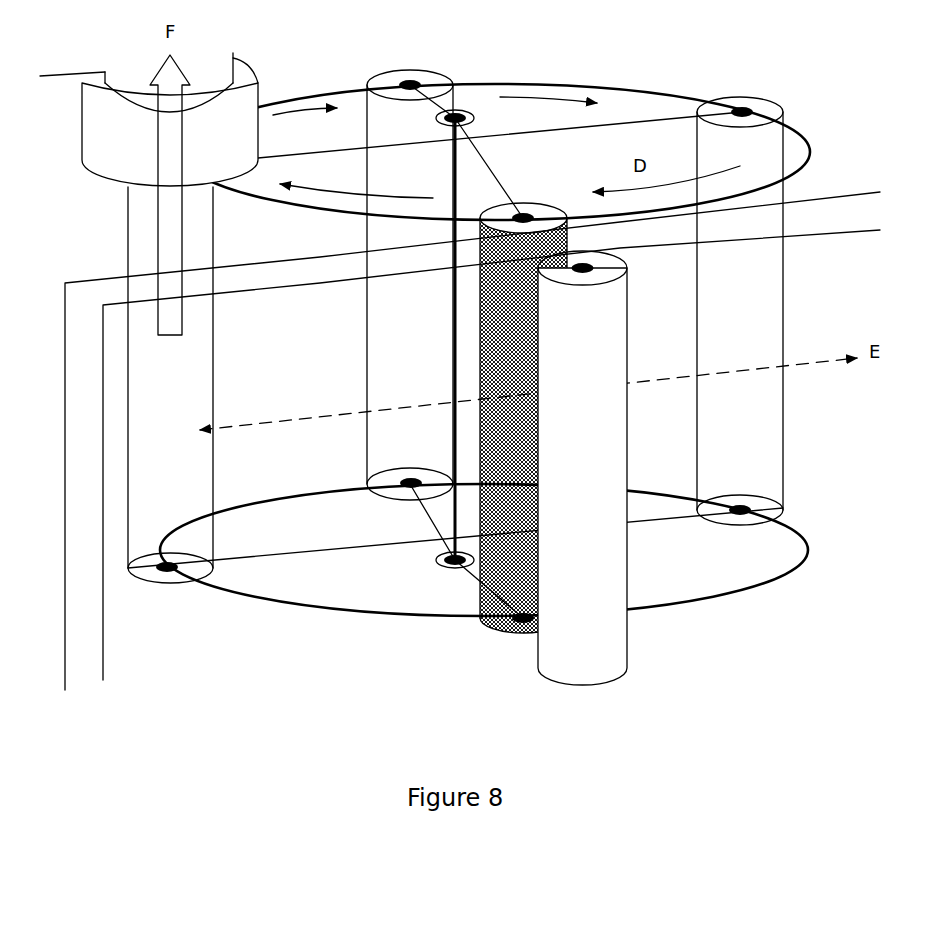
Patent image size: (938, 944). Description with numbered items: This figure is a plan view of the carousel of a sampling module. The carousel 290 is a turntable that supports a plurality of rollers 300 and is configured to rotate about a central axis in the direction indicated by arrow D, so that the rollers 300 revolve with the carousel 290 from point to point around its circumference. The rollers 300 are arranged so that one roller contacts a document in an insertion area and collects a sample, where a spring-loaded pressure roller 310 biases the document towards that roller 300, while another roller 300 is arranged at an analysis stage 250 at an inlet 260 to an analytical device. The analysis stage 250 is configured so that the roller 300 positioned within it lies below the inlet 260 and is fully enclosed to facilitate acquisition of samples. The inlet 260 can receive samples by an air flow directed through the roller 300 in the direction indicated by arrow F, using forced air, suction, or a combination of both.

The analysis stage 250 is at (123, 397).
The inlet 260 is at (78, 175).
The carousel 290 is at (273, 608).
The roller 300 is at (740, 105).
The pressure roller 310 is at (607, 583).